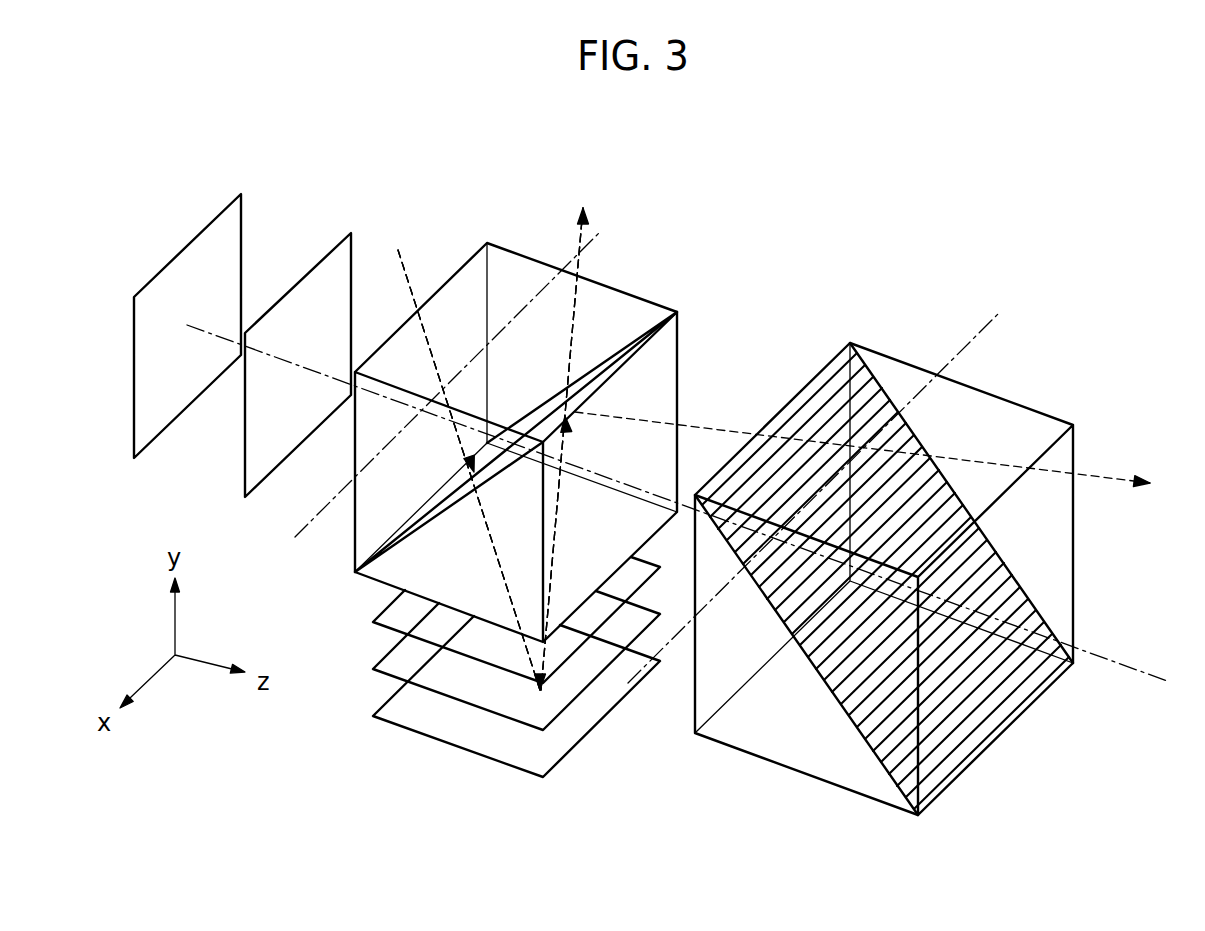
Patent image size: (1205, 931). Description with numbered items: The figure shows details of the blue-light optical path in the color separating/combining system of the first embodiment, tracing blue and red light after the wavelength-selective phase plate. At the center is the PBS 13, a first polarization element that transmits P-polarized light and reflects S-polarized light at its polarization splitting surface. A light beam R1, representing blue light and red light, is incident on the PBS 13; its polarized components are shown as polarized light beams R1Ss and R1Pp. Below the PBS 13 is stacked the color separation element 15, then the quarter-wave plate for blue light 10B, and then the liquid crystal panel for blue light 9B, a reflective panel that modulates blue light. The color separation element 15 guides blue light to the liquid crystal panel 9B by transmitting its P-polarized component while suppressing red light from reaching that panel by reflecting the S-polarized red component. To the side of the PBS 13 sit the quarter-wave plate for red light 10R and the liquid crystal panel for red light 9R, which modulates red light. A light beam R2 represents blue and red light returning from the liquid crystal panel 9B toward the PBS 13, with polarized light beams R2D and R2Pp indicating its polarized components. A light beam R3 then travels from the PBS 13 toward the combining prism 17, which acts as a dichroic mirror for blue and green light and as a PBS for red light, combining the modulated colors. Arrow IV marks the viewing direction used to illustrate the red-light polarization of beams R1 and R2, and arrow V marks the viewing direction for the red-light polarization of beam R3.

The liquid crystal panel for red light 9R is at (134, 426).
The quarter-wave plate for red light 10R is at (245, 463).
The PBS 13 is at (507, 270).
The color separation element 15 is at (373, 627).
The quarter-wave plate for blue light 10B is at (373, 669).
The liquid crystal panel for blue light 9B is at (452, 731).
The combining prism 17 is at (985, 410).
The light beam R1 is at (407, 272).
The polarized light beam R1Ss is at (487, 533).
The polarized light beam R1Pp is at (405, 470).
The light beam R2 is at (558, 541).
The polarized light beam R2D is at (584, 258).
The polarized light beam R2Pp is at (629, 449).
The light beam R3 is at (712, 426).
The arrow IV is at (530, 208).
The arrow V is at (827, 353).